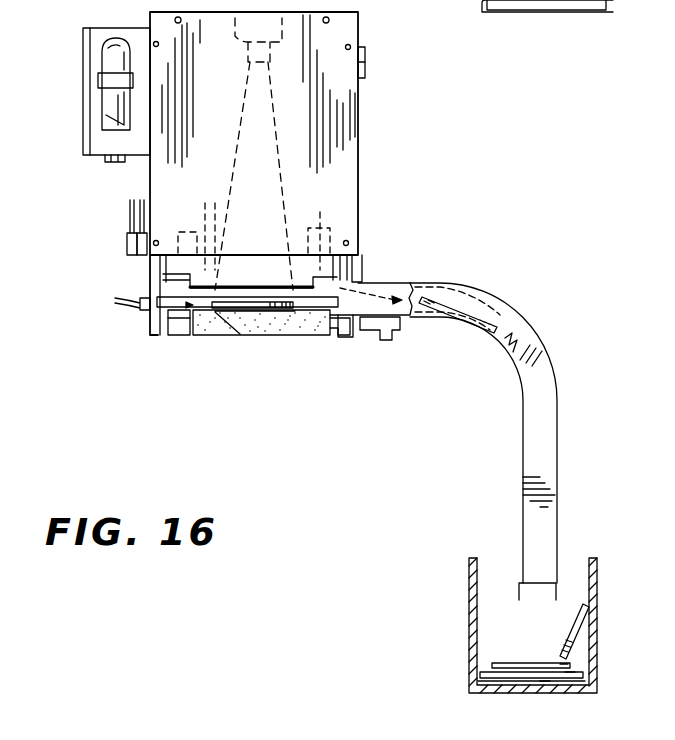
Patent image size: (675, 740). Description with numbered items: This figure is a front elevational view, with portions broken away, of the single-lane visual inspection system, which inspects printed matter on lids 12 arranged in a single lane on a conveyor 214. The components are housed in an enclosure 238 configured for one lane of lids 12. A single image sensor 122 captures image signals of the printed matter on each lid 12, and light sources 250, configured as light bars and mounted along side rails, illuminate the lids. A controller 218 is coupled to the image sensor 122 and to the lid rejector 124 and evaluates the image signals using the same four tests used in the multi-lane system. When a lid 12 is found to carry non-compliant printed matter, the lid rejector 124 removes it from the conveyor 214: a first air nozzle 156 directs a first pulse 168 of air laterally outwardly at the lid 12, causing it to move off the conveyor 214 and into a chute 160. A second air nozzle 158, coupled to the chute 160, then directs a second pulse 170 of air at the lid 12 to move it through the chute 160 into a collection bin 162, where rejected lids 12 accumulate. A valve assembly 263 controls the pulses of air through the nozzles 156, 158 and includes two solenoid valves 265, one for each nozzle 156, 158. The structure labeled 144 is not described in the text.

The lid 12 is at (255, 312).
The image sensor 122 is at (249, 154).
The lid rejector 124 is at (397, 357).
The optical reading housing 144 is at (338, 168).
The first air nozzle 156 is at (183, 337).
The second air nozzle 158 is at (343, 337).
The chute 160 is at (533, 333).
The collection bin 162 is at (470, 587).
The first pulse of air 168 is at (197, 335).
The second pulse of air 170 is at (388, 278).
The conveyor 214 is at (235, 337).
The controller 218 is at (95, 46).
The enclosure 238 is at (362, 118).
The light sources 250 is at (330, 190).
The valve assembly 263 is at (118, 238).
The solenoid valves 265 is at (130, 212).